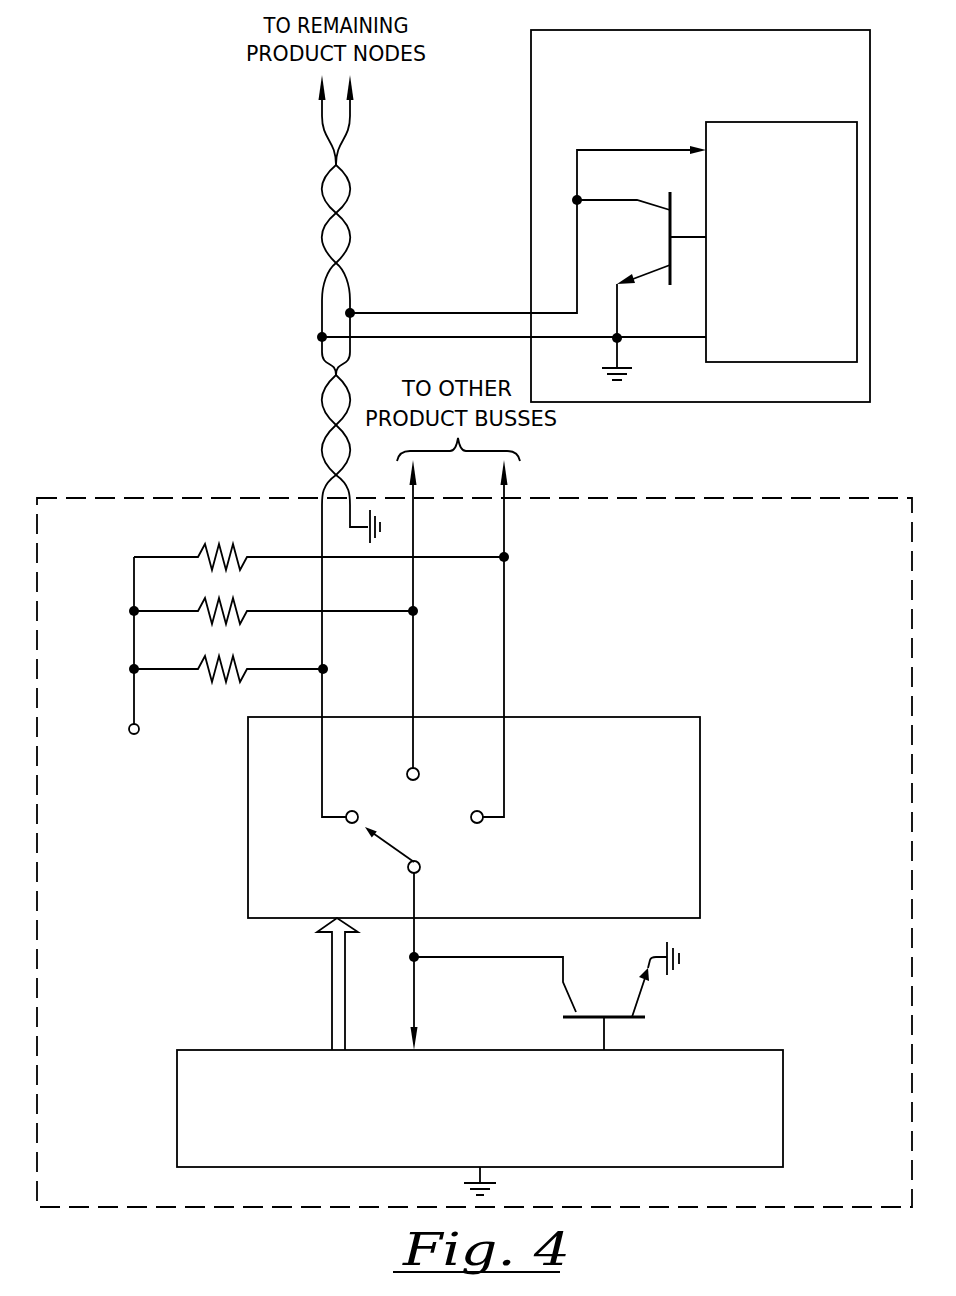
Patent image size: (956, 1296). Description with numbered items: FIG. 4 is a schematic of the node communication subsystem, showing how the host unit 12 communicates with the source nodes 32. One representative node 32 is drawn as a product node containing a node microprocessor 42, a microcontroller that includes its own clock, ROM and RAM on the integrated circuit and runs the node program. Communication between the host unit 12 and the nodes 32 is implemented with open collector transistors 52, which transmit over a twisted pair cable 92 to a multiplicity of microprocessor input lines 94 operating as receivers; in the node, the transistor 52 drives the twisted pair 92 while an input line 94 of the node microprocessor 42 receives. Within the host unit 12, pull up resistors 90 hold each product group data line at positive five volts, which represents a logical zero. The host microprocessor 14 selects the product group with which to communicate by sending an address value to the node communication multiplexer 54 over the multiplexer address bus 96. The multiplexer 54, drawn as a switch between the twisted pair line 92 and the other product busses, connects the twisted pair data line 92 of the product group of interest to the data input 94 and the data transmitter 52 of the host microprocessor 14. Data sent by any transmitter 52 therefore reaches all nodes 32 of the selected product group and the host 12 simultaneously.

The host unit 12 is at (212, 493).
The host microprocessor 14 is at (718, 1155).
The source node 32 is at (531, 108).
The node microprocessor 42 is at (704, 128).
The open collector transistor 52 is at (658, 205).
The node communication multiplexer 54 is at (310, 892).
The pull up resistor 90 is at (244, 566).
The twisted pair cable 92 is at (320, 192).
The microprocessor input line 94 is at (662, 149).
The multiplexer address bus 96 is at (330, 1011).